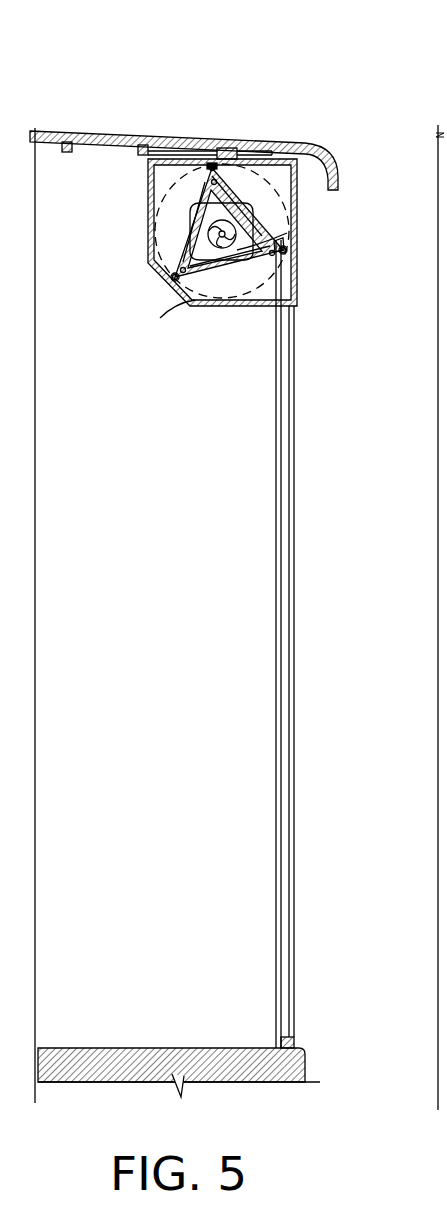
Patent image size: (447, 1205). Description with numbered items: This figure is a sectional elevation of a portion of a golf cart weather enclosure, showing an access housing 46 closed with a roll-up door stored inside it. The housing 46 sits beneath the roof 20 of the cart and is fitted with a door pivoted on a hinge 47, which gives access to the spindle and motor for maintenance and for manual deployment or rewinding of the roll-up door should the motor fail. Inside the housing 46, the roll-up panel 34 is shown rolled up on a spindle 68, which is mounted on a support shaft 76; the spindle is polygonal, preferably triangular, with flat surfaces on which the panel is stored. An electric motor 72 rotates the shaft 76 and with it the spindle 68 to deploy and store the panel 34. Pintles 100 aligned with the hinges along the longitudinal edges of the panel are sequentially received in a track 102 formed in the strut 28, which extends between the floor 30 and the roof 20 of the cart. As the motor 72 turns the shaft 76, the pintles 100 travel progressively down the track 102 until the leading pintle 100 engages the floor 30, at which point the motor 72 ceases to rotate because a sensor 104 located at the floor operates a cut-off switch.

The roof 20 is at (113, 133).
The pintles 100 is at (212, 163).
The roll-up panel 34 is at (186, 217).
The hinge 47 is at (148, 252).
The support shaft 76 is at (272, 222).
The housing 46 is at (262, 306).
The spindle 68 is at (217, 262).
The electric motor 72 is at (230, 305).
The strut 28 is at (297, 731).
The track 102 is at (283, 835).
The floor 30 is at (112, 1047).
The sensor 104 is at (298, 1047).